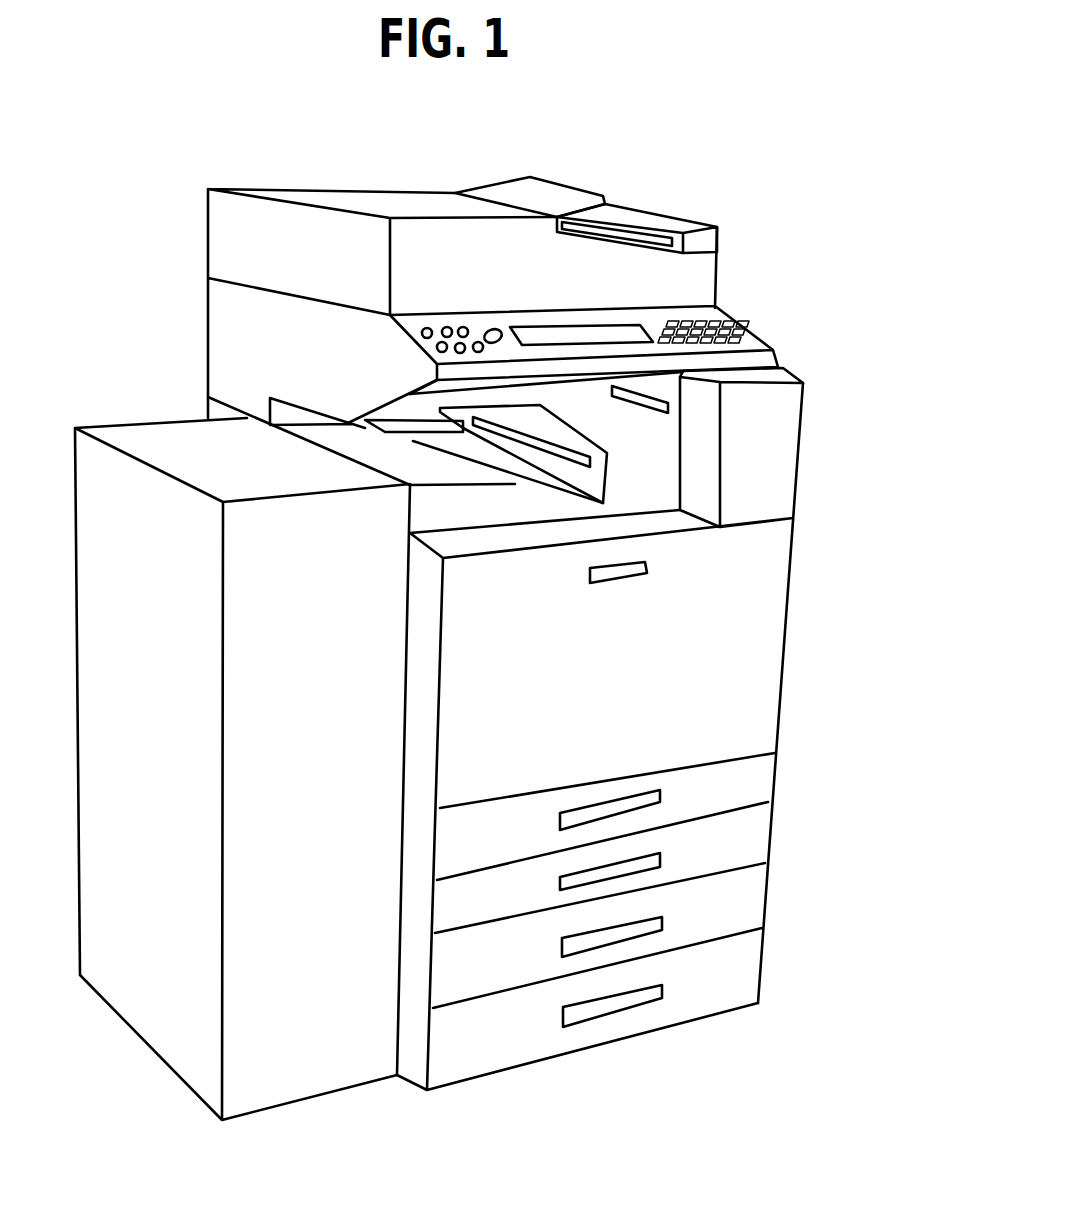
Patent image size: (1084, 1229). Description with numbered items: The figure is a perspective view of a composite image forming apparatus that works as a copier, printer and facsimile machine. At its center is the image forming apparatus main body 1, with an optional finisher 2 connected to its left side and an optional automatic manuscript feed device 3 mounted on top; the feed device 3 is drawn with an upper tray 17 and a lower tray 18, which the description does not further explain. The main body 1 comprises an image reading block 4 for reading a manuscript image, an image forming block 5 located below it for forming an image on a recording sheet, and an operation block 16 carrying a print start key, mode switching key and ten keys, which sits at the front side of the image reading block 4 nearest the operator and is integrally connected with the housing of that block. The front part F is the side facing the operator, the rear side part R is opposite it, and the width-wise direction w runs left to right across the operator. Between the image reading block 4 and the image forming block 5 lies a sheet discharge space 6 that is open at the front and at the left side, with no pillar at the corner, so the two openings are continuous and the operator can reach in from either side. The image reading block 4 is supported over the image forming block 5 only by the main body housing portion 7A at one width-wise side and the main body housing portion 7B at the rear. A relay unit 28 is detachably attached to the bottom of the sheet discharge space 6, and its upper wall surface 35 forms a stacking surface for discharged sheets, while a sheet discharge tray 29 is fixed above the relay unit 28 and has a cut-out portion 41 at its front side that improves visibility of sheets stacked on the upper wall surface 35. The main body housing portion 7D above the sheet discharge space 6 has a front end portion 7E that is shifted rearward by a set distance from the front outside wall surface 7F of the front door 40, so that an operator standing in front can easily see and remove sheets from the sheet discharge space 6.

The image forming apparatus main body 1 is at (828, 455).
The finisher 2 is at (129, 393).
The automatic manuscript feed device 3 is at (738, 252).
The image reading block 4 is at (207, 303).
The image forming block 5 is at (805, 548).
The sheet discharge space 6 is at (407, 473).
The main body housing portion 7A is at (765, 492).
The main body housing portion 7B is at (295, 413).
The main body housing portion 7D is at (680, 315).
The front end portion 7E is at (720, 400).
The front outside wall surface 7F is at (743, 548).
The operation block 16 is at (720, 310).
The document feed tray 17 is at (528, 192).
The document discharge tray 18 is at (583, 250).
The relay unit 28 is at (379, 526).
The sheet discharge tray 29 is at (360, 423).
The upper wall surface 35 is at (393, 458).
The front door 40 is at (467, 707).
The cut-out portion 41 is at (487, 413).
The rear side part R is at (207, 413).
The front part F is at (745, 738).
The width-wise direction w is at (572, 681).